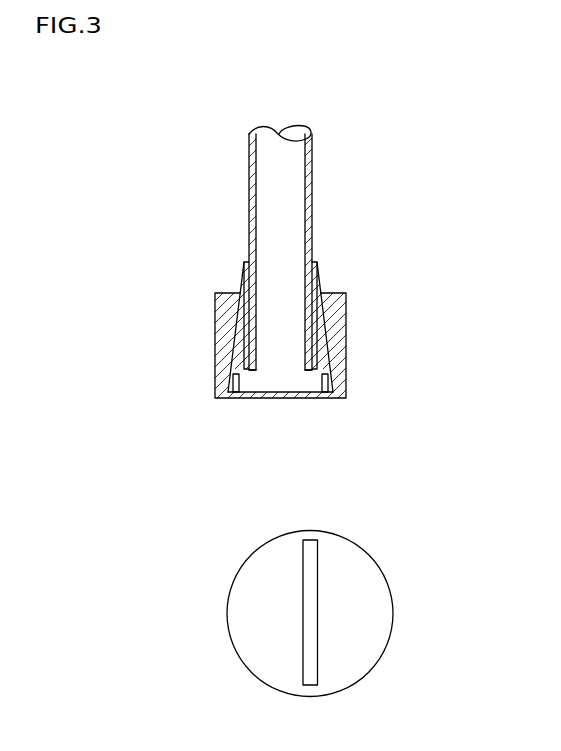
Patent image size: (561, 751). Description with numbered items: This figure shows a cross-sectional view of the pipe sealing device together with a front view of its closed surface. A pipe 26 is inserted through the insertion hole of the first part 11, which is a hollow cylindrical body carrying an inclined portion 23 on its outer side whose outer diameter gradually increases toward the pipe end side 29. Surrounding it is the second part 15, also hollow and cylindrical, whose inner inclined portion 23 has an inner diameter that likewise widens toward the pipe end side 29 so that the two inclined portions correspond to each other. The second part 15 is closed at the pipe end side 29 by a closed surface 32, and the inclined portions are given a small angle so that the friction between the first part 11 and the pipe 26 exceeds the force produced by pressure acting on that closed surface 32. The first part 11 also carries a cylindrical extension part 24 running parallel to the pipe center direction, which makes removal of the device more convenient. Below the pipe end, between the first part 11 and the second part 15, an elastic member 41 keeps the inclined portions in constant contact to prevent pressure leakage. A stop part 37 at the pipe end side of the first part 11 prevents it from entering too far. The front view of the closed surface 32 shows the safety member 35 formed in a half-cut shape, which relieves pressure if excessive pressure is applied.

The pipe 26 is at (218, 182).
The pipe end side 29 is at (308, 366).
The cylindrical extension part 24 is at (232, 268).
The inclined portion 23 is at (320, 307).
The second part 15 is at (188, 340).
The first part 11 is at (240, 359).
The stop part 37 is at (253, 377).
The elastic member 41 is at (332, 385).
The closed surface 32 is at (288, 415).
The safety member 35 is at (318, 610).